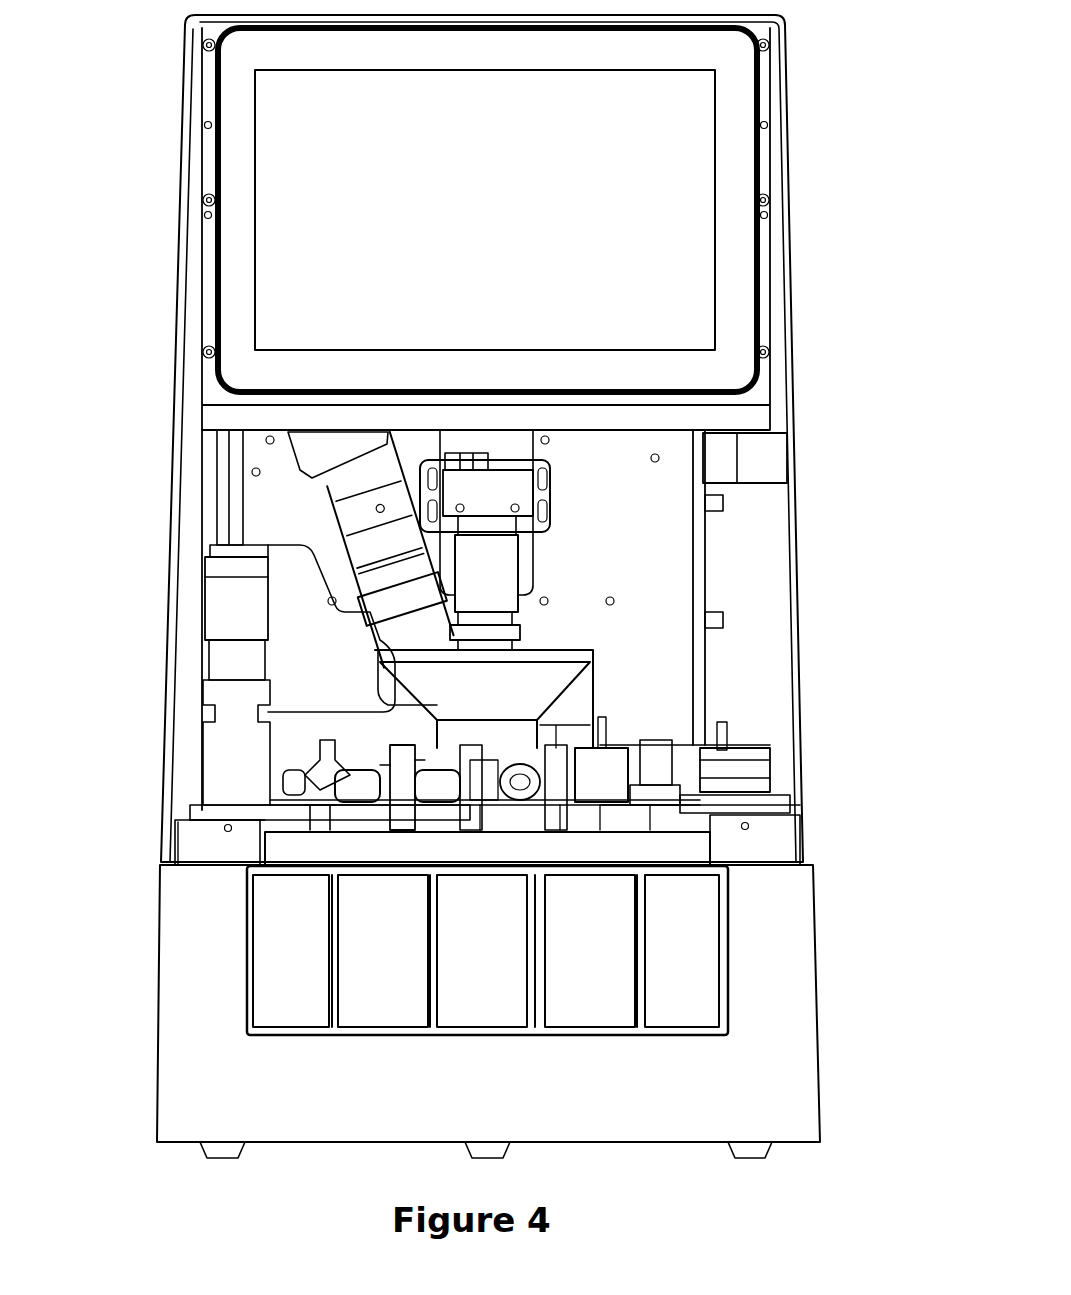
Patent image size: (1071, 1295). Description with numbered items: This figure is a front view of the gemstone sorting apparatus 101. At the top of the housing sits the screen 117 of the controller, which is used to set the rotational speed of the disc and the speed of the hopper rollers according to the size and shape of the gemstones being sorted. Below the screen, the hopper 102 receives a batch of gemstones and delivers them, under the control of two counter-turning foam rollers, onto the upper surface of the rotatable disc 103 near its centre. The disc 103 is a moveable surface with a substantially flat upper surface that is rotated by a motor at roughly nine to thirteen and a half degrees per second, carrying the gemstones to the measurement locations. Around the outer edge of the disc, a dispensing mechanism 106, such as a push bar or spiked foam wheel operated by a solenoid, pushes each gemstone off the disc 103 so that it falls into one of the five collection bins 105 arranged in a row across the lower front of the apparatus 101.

The apparatus 101 is at (125, 108).
The screen 117 is at (642, 50).
The hopper 102 is at (440, 683).
The dispensing mechanism 106 is at (325, 790).
The rotatable disc 103 is at (302, 845).
The collection bins 105 is at (710, 978).